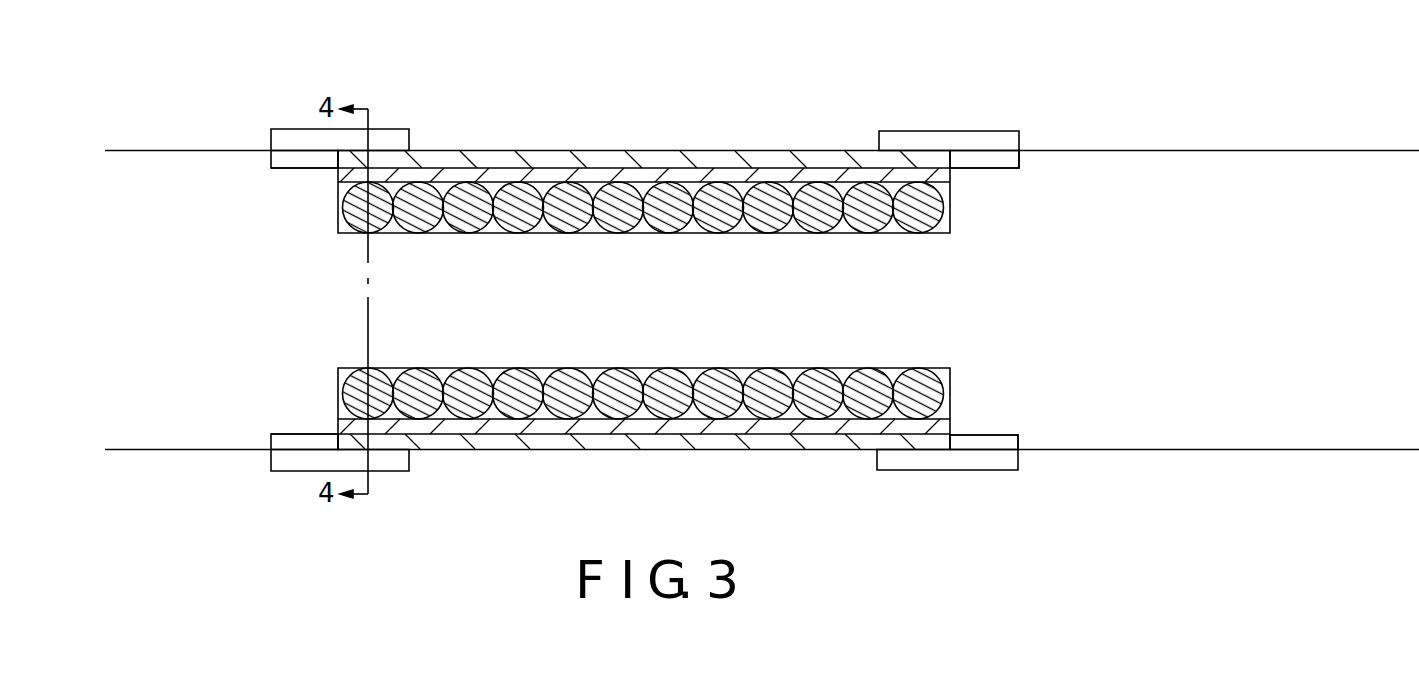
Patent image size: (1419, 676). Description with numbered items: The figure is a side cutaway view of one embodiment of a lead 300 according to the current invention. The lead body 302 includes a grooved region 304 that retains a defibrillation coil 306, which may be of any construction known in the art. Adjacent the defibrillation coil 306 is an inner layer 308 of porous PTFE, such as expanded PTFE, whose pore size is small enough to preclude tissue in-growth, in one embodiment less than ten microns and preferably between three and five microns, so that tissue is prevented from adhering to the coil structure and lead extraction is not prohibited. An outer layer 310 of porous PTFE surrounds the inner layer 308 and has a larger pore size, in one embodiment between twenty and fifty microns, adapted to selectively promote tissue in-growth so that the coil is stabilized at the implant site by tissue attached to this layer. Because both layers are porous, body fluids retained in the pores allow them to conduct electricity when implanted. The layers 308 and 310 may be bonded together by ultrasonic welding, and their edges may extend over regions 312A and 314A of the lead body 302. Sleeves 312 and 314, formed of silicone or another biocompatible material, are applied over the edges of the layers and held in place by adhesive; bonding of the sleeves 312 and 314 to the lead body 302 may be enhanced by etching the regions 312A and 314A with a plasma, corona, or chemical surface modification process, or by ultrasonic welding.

The lead 300 is at (1183, 70).
The lead body 302 is at (1150, 150).
The grooved region 304 is at (798, 368).
The defibrillation coil 306 is at (518, 205).
The layer of porous PTFE 308 is at (657, 176).
The outer layer of porous PTFE 310 is at (755, 153).
The sleeve 312 is at (290, 140).
The region of the lead body 312A is at (290, 163).
The sleeve 314 is at (992, 138).
The region of the lead body 314A is at (985, 160).